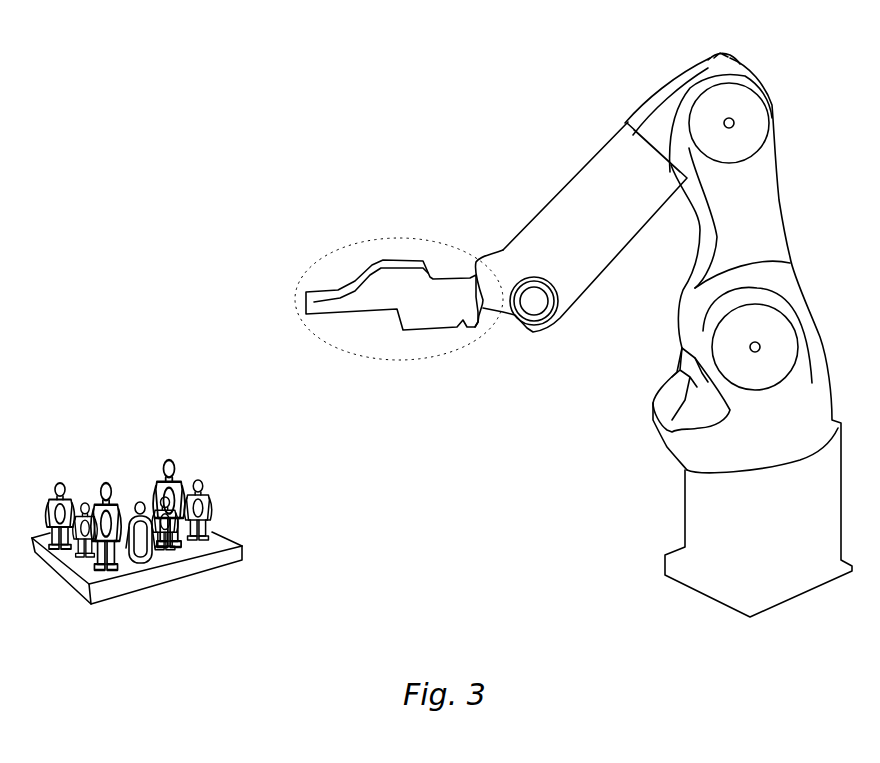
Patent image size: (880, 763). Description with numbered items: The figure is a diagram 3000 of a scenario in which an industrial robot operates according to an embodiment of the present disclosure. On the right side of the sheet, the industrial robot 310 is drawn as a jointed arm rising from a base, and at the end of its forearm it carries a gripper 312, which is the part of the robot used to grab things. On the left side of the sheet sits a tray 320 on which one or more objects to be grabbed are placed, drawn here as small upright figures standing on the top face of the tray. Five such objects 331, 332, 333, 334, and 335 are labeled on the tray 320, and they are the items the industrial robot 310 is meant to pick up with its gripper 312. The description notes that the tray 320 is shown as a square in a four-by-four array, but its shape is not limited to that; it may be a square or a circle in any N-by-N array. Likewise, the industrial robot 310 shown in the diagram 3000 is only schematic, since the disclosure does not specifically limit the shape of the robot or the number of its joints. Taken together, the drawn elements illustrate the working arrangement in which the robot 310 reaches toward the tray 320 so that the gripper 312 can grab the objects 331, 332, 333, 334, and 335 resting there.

The diagram 3000 is at (425, 47).
The industrial robot 310 is at (780, 139).
The gripper 312 is at (433, 358).
The tray 320 is at (220, 583).
The object 331 is at (177, 483).
The object 332 is at (230, 473).
The object 333 is at (118, 483).
The object 334 is at (170, 513).
The object 335 is at (137, 563).